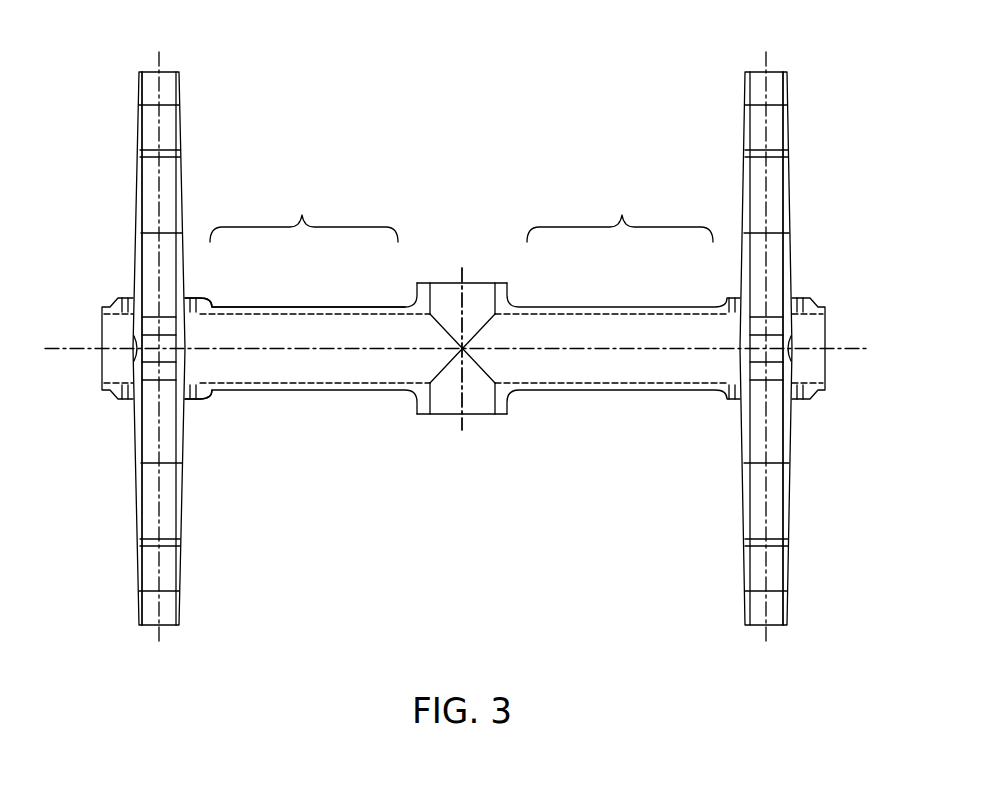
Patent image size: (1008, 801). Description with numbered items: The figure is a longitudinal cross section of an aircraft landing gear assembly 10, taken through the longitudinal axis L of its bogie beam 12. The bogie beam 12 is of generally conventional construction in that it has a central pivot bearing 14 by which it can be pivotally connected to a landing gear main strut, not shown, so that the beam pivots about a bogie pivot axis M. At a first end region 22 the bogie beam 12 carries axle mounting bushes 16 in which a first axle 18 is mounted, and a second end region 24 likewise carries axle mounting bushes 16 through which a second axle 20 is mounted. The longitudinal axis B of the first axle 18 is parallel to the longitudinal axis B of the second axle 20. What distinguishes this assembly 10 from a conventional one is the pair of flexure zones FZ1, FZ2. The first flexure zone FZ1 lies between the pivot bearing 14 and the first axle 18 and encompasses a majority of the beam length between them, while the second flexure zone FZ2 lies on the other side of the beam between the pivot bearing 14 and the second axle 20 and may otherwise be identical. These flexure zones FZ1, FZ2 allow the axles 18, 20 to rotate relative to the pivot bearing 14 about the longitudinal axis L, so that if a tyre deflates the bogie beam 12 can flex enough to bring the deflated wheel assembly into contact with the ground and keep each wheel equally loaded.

The aircraft landing gear assembly 10 is at (815, 72).
The bogie beam 12 is at (595, 392).
The central pivot bearing 14 is at (472, 403).
The axle mounting bushes 16 is at (187, 400).
The first axle 18 is at (182, 572).
The second axle 20 is at (790, 572).
The first end region 22 is at (113, 292).
The second end region 24 is at (805, 286).
The longitudinal axis of the axle B is at (158, 442).
The first flexure zone FZ1 is at (302, 212).
The second flexure zone FZ2 is at (622, 212).
The bogie pivot axis M is at (468, 297).
The longitudinal axis of the bogie beam L is at (340, 345).